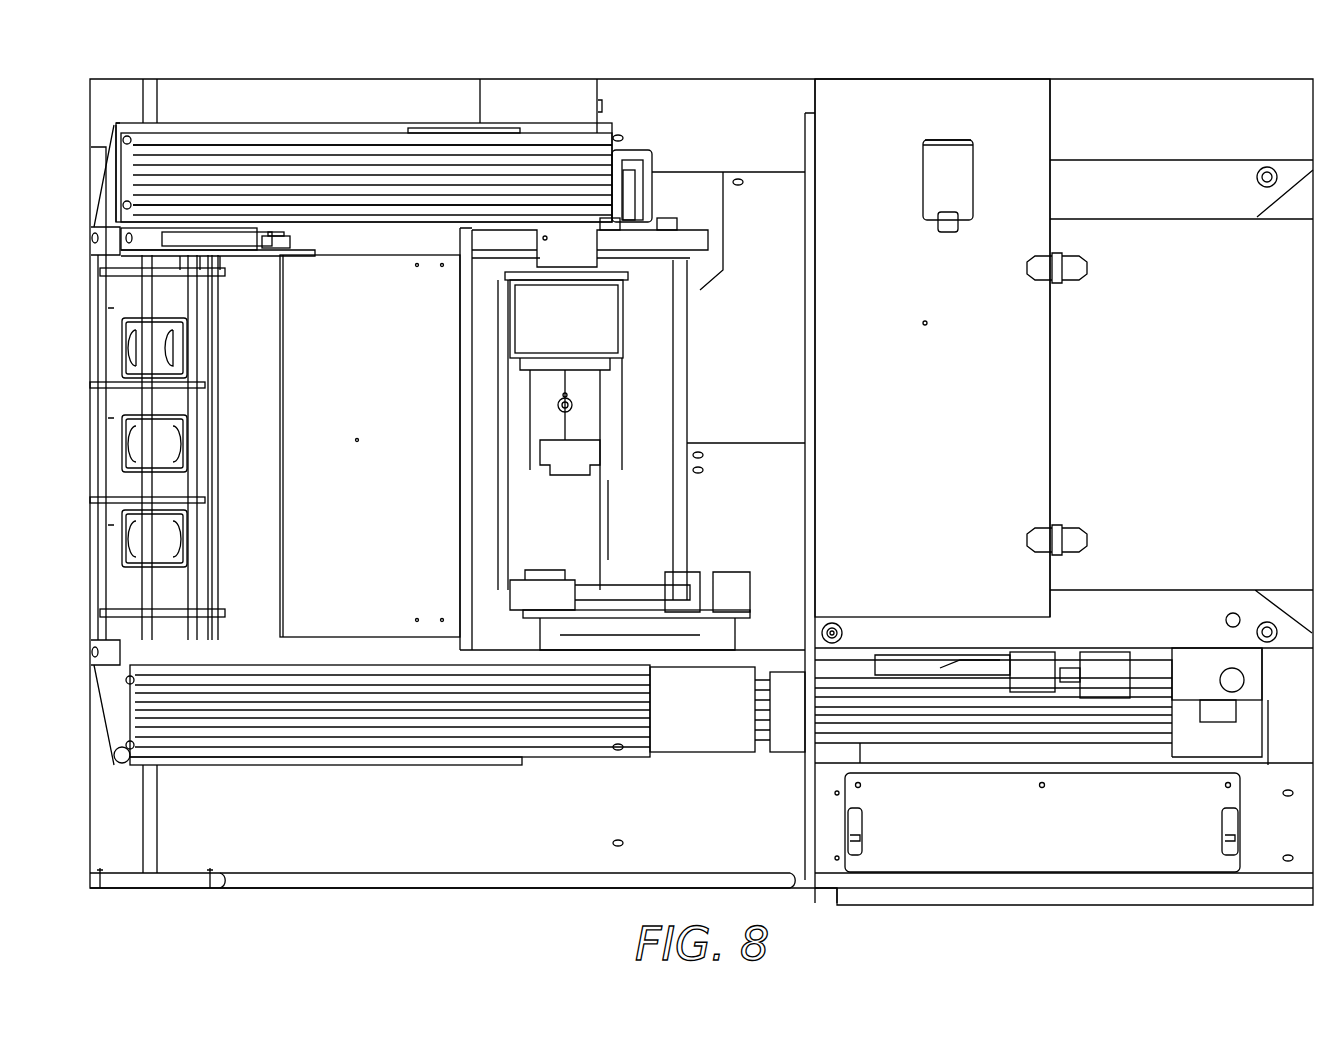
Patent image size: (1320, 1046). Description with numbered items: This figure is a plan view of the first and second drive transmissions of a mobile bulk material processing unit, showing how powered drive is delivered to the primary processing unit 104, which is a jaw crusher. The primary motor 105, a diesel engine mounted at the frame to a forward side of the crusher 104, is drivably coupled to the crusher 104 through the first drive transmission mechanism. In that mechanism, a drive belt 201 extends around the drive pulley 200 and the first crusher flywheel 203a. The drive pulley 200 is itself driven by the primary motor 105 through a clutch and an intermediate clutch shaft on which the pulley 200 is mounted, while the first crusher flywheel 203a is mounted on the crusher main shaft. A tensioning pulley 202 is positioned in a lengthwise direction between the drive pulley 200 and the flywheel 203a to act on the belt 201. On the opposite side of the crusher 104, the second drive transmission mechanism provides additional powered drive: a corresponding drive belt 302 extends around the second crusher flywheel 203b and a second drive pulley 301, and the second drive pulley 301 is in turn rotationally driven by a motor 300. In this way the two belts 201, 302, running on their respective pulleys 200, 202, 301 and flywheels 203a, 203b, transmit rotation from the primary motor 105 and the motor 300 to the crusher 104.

The primary processing unit 104 is at (352, 405).
The primary motor 105 is at (1160, 405).
The drive pulley 200 is at (1152, 745).
The drive belt 201 is at (580, 730).
The tensioning pulley 202 is at (706, 740).
The first crusher flywheel 203a is at (487, 748).
The second crusher flywheel 203b is at (435, 137).
The motor 300 is at (590, 393).
The second drive pulley 301 is at (560, 143).
The drive belt 302 is at (333, 157).